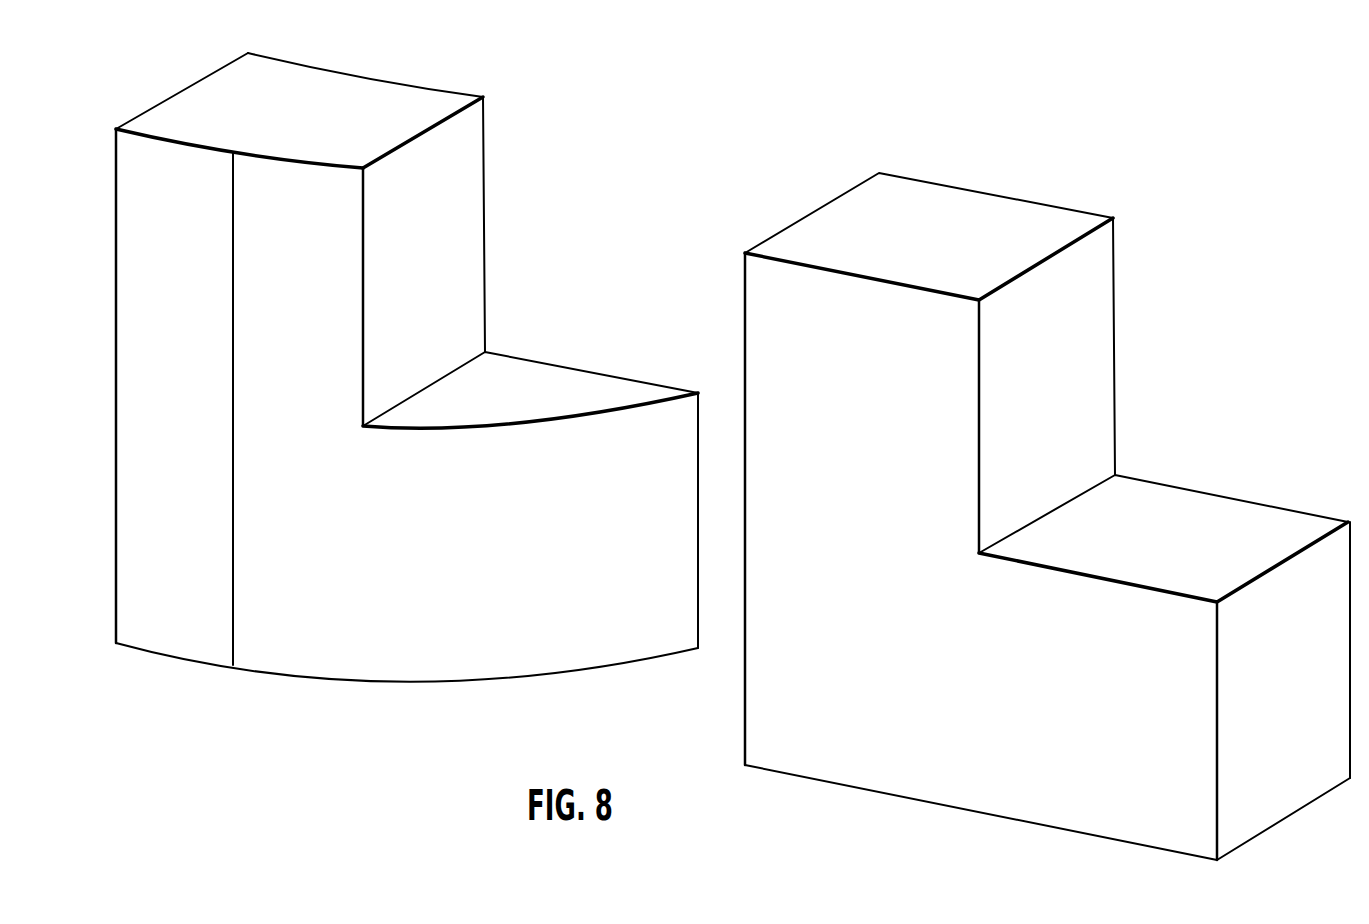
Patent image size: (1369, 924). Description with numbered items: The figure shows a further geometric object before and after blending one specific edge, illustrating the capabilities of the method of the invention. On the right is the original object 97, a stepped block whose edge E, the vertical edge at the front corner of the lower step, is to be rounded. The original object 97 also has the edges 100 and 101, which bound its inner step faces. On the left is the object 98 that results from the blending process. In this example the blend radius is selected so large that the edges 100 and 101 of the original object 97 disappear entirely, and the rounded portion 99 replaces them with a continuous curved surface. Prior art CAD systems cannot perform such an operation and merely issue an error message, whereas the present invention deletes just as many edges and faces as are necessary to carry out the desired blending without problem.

The object 97 is at (1023, 186).
The object 98 is at (387, 60).
The rounded portion 99 is at (397, 662).
The edge 100 is at (980, 417).
The edge 101 is at (1110, 580).
The edge E is at (1218, 723).